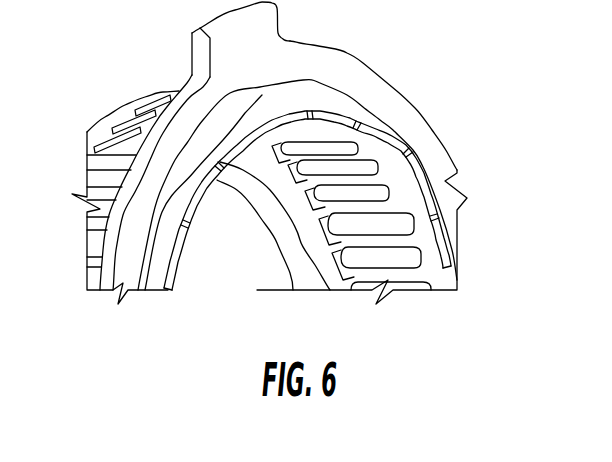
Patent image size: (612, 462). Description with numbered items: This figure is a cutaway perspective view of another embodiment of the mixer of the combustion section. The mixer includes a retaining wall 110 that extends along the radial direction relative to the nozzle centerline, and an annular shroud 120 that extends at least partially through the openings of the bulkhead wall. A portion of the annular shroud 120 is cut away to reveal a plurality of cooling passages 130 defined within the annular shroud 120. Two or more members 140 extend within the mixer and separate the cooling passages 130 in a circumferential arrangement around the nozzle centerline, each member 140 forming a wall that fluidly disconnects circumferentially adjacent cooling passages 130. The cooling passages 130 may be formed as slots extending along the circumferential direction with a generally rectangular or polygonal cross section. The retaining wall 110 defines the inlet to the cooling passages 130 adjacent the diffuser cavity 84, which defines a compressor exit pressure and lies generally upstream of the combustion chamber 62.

The retaining wall 110 is at (305, 80).
The cooling passage 130 is at (356, 126).
The member 140 is at (410, 152).
The annular shroud 120 is at (160, 292).
The diffuser cavity 84 is at (45, 233).
The combustion chamber 62 is at (508, 247).